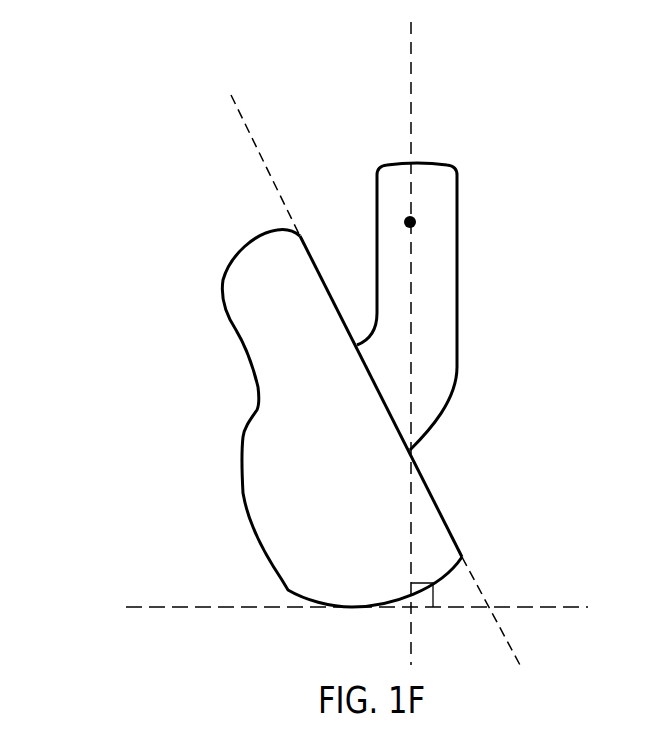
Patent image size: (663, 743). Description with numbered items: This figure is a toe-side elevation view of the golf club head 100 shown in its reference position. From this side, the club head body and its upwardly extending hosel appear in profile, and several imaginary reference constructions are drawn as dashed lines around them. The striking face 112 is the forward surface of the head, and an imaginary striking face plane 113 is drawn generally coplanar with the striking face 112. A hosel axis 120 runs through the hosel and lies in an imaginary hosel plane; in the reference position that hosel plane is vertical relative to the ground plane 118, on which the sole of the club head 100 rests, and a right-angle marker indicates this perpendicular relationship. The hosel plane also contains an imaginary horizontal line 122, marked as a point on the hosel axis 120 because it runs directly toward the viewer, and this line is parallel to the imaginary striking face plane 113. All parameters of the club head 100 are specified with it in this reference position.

The golf club head 100 is at (88, 98).
The striking face 112 is at (315, 262).
The imaginary striking face plane 113 is at (236, 113).
The ground plane 118 is at (558, 604).
The hosel axis 120 is at (464, 343).
The imaginary horizontal line 122 is at (416, 222).